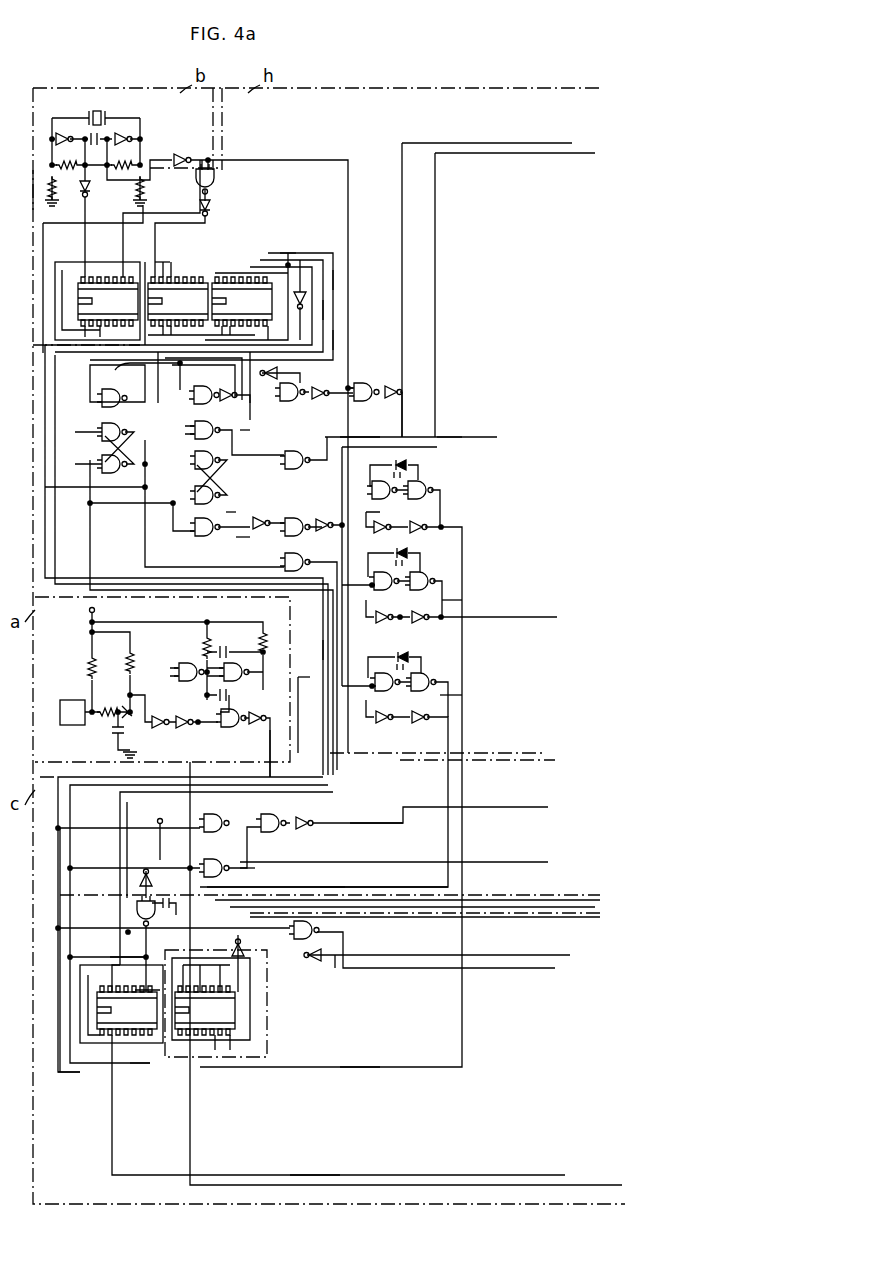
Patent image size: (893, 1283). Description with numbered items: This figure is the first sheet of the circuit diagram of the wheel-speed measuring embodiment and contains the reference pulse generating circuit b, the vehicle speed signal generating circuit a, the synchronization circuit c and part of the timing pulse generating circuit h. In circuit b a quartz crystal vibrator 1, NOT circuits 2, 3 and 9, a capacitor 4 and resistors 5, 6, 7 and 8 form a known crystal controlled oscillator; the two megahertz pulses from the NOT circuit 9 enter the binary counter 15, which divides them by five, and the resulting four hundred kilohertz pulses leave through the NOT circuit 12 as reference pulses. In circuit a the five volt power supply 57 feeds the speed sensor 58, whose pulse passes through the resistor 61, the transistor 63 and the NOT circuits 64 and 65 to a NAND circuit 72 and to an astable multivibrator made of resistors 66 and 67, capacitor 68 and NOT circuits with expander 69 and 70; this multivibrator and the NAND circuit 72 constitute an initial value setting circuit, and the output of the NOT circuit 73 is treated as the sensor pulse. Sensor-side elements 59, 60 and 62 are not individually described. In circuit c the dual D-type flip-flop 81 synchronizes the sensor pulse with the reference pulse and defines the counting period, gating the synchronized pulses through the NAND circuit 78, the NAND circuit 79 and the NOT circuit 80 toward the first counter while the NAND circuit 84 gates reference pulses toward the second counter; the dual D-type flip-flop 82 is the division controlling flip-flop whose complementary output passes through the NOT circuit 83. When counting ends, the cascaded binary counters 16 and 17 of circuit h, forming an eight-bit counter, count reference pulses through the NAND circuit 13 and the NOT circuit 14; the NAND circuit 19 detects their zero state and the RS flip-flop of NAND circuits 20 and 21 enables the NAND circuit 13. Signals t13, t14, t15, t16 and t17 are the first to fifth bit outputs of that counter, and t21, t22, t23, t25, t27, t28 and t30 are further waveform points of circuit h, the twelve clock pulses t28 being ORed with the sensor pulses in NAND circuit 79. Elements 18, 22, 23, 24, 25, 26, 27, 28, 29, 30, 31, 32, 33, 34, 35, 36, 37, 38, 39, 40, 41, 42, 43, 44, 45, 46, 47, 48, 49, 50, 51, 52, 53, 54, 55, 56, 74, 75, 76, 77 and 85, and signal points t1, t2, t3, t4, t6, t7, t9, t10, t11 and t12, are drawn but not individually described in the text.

The quartz crystal vibrator 1 is at (92, 112).
The NOT circuit 2 is at (60, 132).
The NOT circuit 3 is at (122, 132).
The capacitor 4 is at (95, 146).
The resistor 5 is at (56, 182).
The resistor 6 is at (80, 168).
The resistor 7 is at (137, 180).
The resistor 8 is at (34, 186).
The NOT circuit 9 is at (88, 196).
The NOT circuit 12 is at (180, 153).
The NAND circuit 13 is at (216, 179).
The NOT circuit 14 is at (212, 207).
The binary counter 15 is at (110, 296).
The binary counter 16 is at (170, 296).
The binary counter 17 is at (240, 306).
The inverter 18 is at (296, 304).
The NAND circuit 19 is at (108, 392).
The NAND circuit 20 is at (97, 432).
The NAND circuit 21 is at (97, 464).
The junction 22 is at (178, 364).
The NAND gate 23 is at (199, 398).
The inverter 24 is at (226, 394).
The NAND gate 25 is at (190, 430).
The NAND gate 26 is at (220, 466).
The NAND gate 27 is at (190, 495).
The NAND gate 28 is at (200, 532).
The inverter 29 is at (259, 528).
The inverter 30 is at (281, 373).
The NAND gate 31 is at (294, 386).
The inverter 32 is at (318, 398).
The NAND gate 33 is at (363, 384).
The inverter 34 is at (391, 386).
The NAND gate 35 is at (296, 454).
The NAND gate 36 is at (294, 518).
The inverter 37 is at (322, 519).
The NAND gate 38 is at (298, 570).
The NAND gate 39 is at (367, 490).
The NAND gate 40 is at (432, 487).
The line 41 is at (404, 458).
The diode 42 is at (410, 466).
The inverter 43 is at (390, 515).
The inverter 44 is at (424, 524).
The NAND gate 45 is at (376, 588).
The output line 46 is at (446, 598).
The diode 47 is at (410, 553).
The NAND gate 48 is at (429, 572).
The inverter 49 is at (390, 614).
The inverter 50 is at (424, 621).
The NAND gate 51 is at (384, 690).
The output line 52 is at (446, 694).
The diode 53 is at (395, 653).
The NAND gate 54 is at (428, 680).
The inverter 55 is at (382, 722).
The inverter 56 is at (420, 722).
The power supply 57 is at (88, 609).
The speed sensor 58 is at (72, 700).
The resistor 59 is at (88, 655).
The resistor 60 is at (127, 660).
The resistor 61 is at (108, 708).
The capacitor 62 is at (110, 732).
The transistor 63 is at (132, 720).
The NOT circuit 64 is at (157, 715).
The NOT circuit 65 is at (182, 728).
The resistor 66 is at (203, 645).
The resistor 67 is at (260, 630).
The capacitor 68 is at (224, 641).
The NOT circuit with expander 69 is at (178, 668).
The NOT circuit with expander 70 is at (246, 674).
The NAND circuit 72 is at (230, 728).
The NOT circuit 73 is at (255, 726).
The NAND gate 74 is at (134, 912).
The capacitor 75 is at (170, 906).
The inverter 76 is at (151, 880).
The NAND gate 77 is at (232, 872).
The NAND circuit 78 is at (210, 832).
The NAND circuit 79 is at (272, 832).
The NOT circuit 80 is at (303, 829).
The dual D-type flip-flop 81 is at (95, 1002).
The dual D-type flip-flop 82 is at (235, 1003).
The NOT circuit 83 is at (246, 955).
The NAND circuit 84 is at (318, 930).
The inverter 85 is at (315, 961).
The terminal t1 is at (270, 725).
The terminal t2 is at (360, 820).
The terminal t3 is at (305, 1175).
The terminal t4 is at (78, 1072).
The terminal t6 is at (360, 437).
The terminal t7 is at (240, 537).
The terminal t9 is at (130, 944).
The terminal t10 is at (160, 824).
The terminal t11 is at (150, 1063).
The terminal t12 is at (323, 650).
The first bit output signal t13 is at (160, 272).
The second bit output signal t14 is at (288, 263).
The third bit output signal t15 is at (333, 338).
The fourth bit output signal t16 is at (323, 308).
The fifth bit output signal t17 is at (333, 278).
The timing pulse generating circuit output signal t21 is at (148, 437).
The timing pulse generating circuit output signal t22 is at (250, 424).
The timing pulse generating circuit output signal t23 is at (230, 512).
The timing pulse generating circuit output signal t25 is at (352, 1067).
The timing pulse generating circuit output signal t27 is at (338, 887).
The division clock pulses t28 is at (268, 870).
The timing pulse generating circuit output signal t30 is at (323, 665).